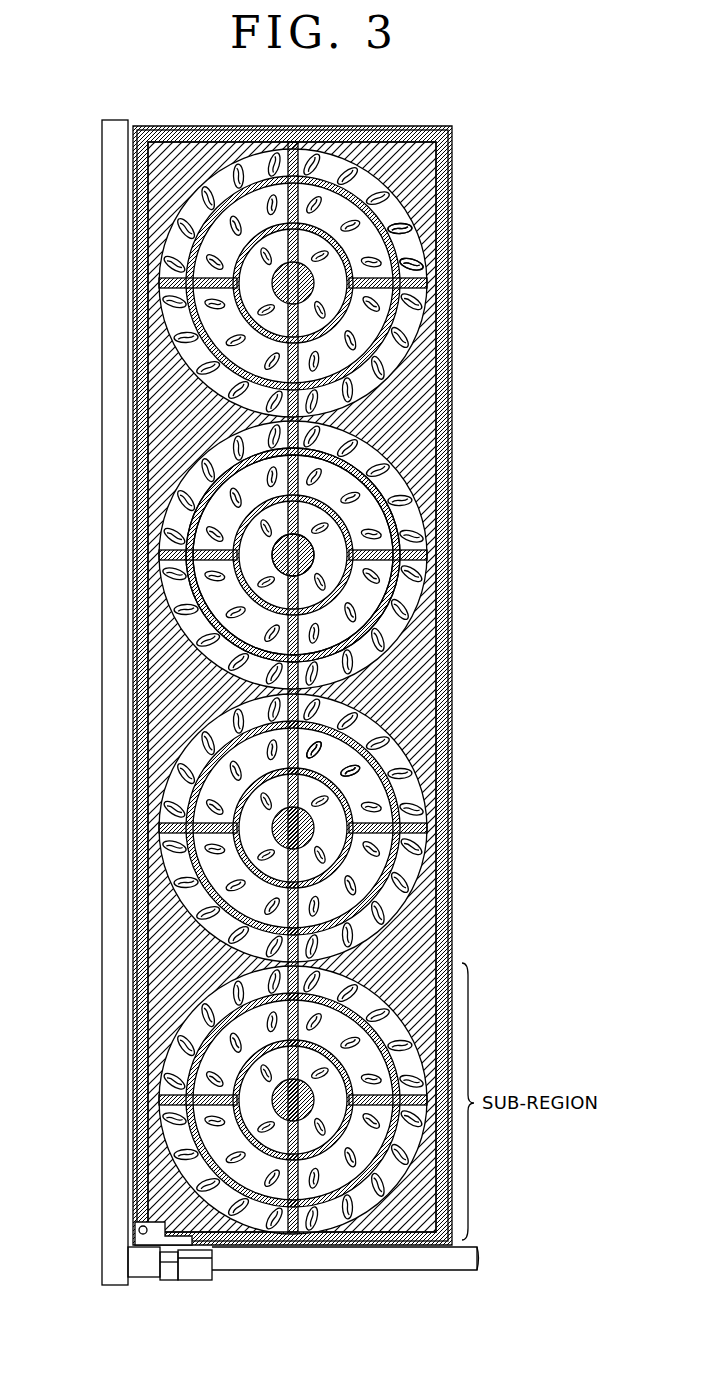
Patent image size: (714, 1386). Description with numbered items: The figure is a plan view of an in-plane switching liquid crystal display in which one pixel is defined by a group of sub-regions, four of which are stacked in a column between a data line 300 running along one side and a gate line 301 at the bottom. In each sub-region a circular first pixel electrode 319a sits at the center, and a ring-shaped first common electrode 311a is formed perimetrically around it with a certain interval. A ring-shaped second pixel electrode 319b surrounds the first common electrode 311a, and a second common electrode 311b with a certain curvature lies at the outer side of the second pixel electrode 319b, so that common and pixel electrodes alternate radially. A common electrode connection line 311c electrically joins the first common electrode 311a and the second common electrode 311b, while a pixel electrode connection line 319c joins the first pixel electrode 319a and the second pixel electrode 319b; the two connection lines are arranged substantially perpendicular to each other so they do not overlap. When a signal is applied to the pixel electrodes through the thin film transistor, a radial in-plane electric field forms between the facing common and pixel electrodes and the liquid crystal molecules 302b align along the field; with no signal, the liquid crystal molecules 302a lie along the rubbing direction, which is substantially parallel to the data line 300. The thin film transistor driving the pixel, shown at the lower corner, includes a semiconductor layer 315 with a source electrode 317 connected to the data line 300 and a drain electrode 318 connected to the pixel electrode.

The data line 300 is at (108, 690).
The gate line 301 is at (353, 1262).
The liquid crystal molecules 302a is at (413, 258).
The liquid crystal molecules 302b is at (410, 233).
The first common electrode 311a is at (358, 760).
The second common electrode 311b is at (412, 933).
The common electrode connection line 311c is at (430, 816).
The semiconductor layer 315 is at (158, 1265).
The source electrode 317 is at (170, 1268).
The drain electrode 318 is at (195, 1265).
The first pixel electrode 319a is at (314, 550).
The second pixel electrode 319b is at (382, 618).
The pixel electrode connection line 319c is at (378, 658).